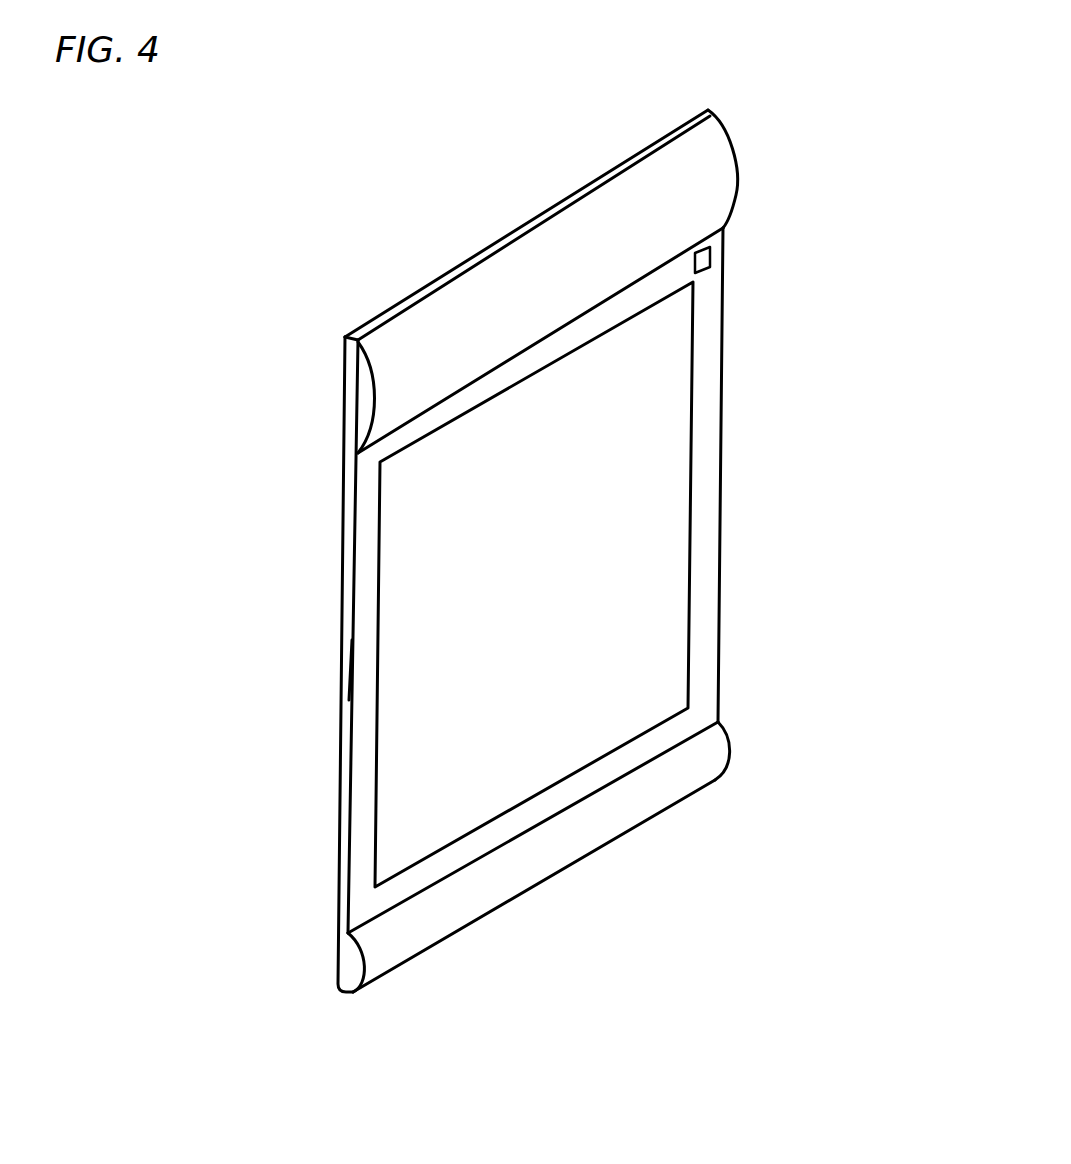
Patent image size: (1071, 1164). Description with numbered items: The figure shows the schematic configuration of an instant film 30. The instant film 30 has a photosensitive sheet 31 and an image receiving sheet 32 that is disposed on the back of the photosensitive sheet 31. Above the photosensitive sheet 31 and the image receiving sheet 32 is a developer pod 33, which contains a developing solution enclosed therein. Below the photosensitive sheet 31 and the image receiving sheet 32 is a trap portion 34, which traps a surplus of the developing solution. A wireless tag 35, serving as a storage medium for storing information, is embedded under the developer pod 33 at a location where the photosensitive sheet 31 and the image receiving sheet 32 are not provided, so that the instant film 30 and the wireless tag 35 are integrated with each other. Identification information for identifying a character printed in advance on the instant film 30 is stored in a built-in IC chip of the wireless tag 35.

The instant film 30 is at (457, 262).
The photosensitive sheet 31 is at (445, 600).
The image receiving sheet 32 is at (398, 728).
The developer pod 33 is at (702, 196).
The trap portion 34 is at (703, 758).
The wireless tag 35 is at (710, 263).